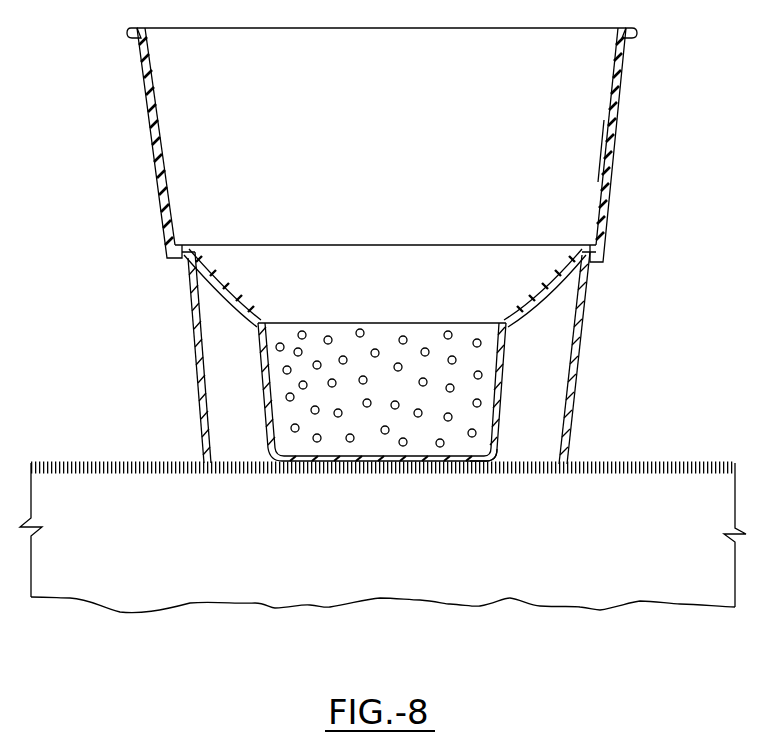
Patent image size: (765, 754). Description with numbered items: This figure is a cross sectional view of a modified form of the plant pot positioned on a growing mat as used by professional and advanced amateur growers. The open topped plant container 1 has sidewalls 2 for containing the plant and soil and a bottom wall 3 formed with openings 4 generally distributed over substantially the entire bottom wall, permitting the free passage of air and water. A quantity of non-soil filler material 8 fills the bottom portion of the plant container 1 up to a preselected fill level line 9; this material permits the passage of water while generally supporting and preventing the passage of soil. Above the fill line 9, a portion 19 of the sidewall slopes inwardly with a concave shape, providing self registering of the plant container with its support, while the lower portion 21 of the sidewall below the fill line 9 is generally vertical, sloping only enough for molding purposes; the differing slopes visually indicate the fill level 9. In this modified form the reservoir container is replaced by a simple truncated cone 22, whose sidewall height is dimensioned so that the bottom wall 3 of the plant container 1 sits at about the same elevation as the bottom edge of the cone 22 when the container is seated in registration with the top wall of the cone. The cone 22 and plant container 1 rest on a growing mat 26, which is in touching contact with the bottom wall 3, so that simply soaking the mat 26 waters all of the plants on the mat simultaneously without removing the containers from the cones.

The plant container 1 is at (614, 128).
The sidewalls 2 is at (608, 182).
The bottom wall 3 is at (487, 467).
The openings 4 is at (462, 465).
The non-soil filler material 8 is at (487, 363).
The preselected fill level line 9 is at (345, 322).
The sloping portion of sidewall 19 is at (248, 327).
The lower portion of sidewall 21 is at (500, 392).
The truncated cone 22 is at (580, 358).
The growing mat 26 is at (648, 463).